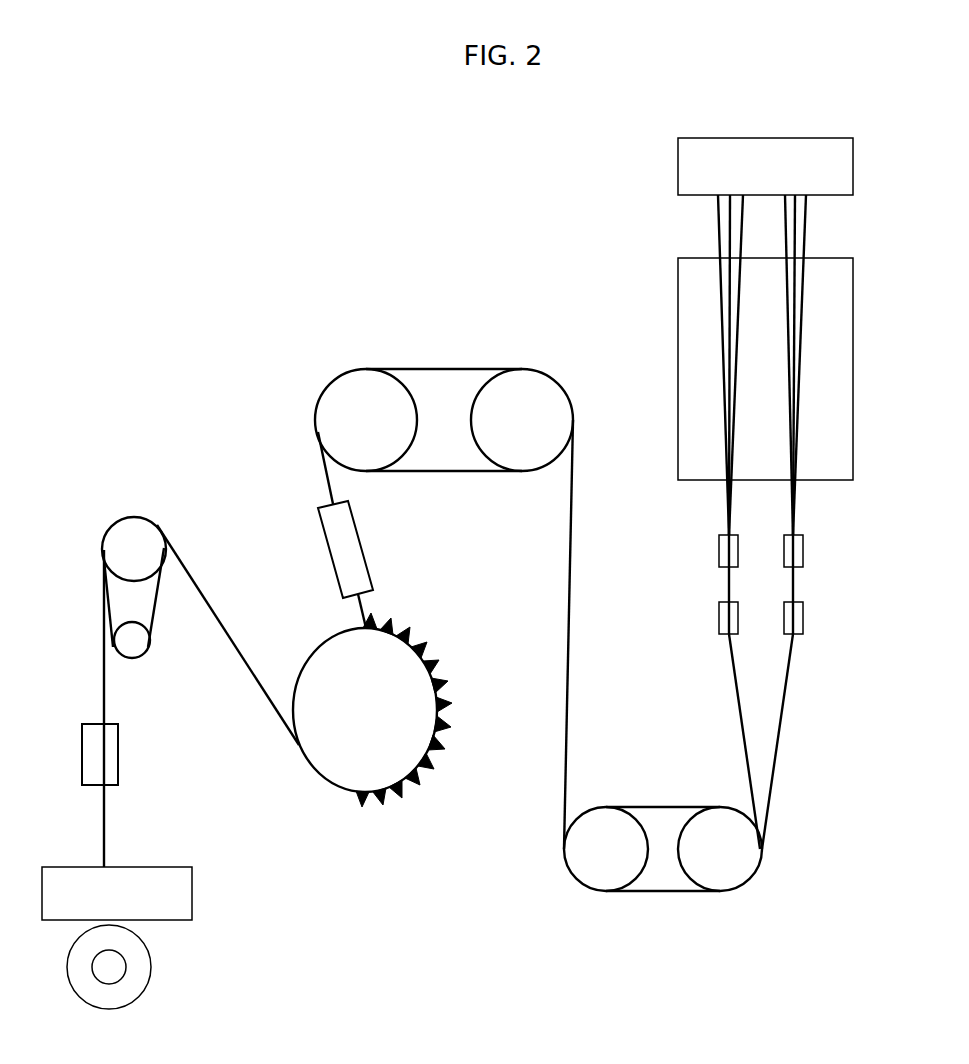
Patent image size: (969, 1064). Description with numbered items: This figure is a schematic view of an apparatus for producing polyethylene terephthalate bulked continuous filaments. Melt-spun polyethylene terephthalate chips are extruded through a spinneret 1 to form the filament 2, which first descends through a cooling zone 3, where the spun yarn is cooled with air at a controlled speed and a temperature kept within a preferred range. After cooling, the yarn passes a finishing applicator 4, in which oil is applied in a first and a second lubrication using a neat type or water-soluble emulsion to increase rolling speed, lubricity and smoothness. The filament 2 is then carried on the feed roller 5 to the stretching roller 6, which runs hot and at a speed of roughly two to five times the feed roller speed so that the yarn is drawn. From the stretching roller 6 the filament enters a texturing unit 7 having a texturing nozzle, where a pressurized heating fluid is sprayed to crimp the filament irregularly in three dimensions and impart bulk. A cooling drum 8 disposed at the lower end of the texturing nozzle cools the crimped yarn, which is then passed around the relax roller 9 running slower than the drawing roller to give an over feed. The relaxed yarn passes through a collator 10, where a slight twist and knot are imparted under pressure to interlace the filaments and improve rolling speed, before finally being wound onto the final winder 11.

The spinneret 1 is at (672, 163).
The filament 2 is at (703, 226).
The cooling zone 3 is at (672, 320).
The finishing applicator 4 is at (710, 548).
The feed roller 5 is at (557, 848).
The stretching roller 6 is at (307, 418).
The texturing unit 7 is at (373, 540).
The cooling drum 8 is at (448, 713).
The relax roller 9 is at (168, 540).
The collator 10 is at (128, 758).
The final winder 11 is at (200, 893).